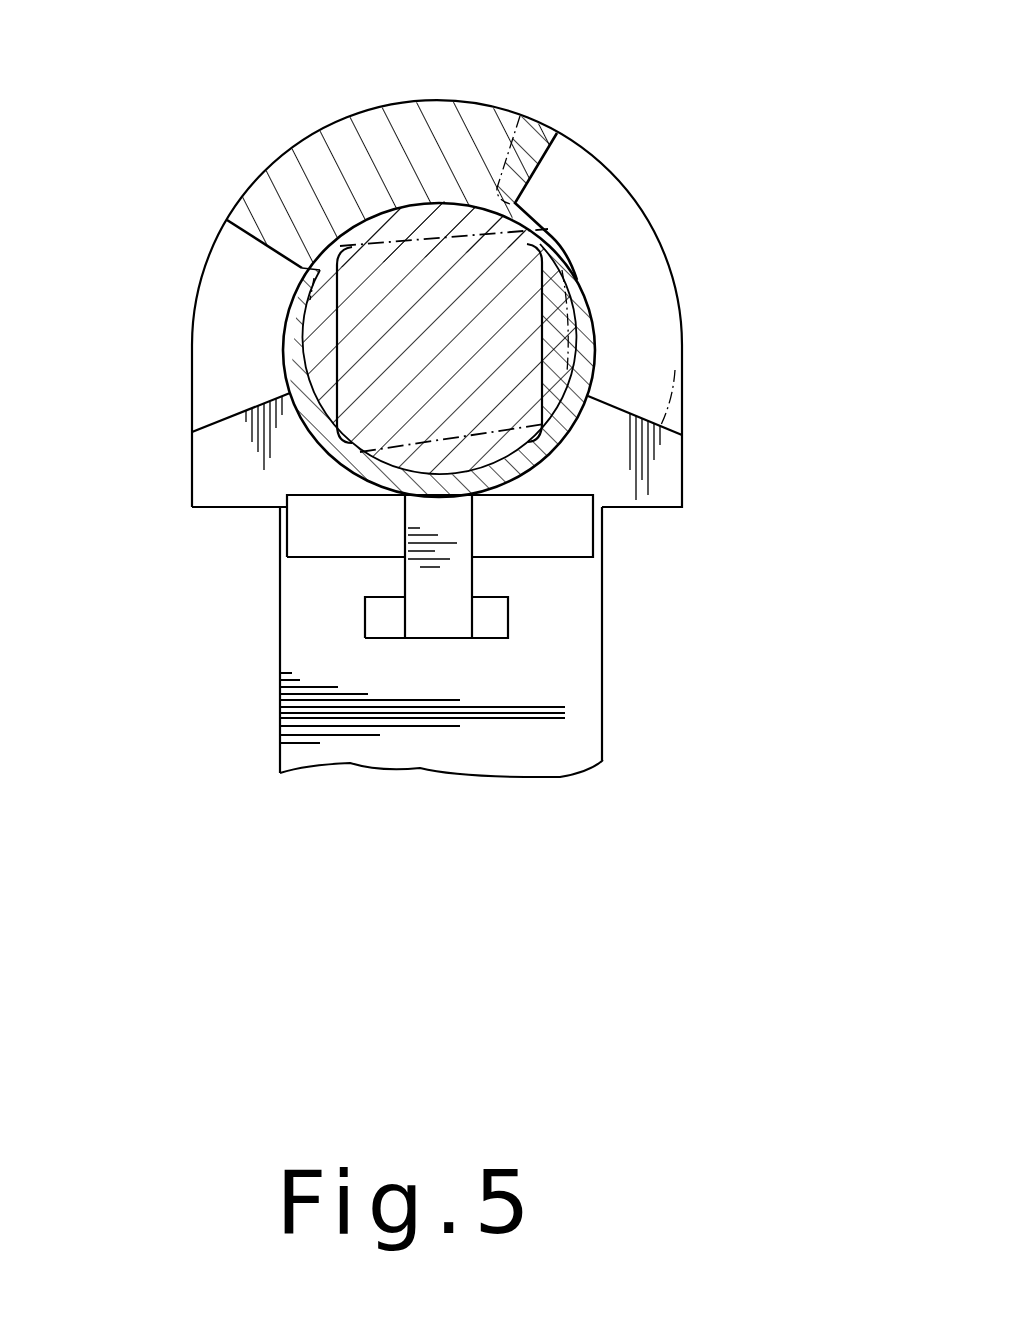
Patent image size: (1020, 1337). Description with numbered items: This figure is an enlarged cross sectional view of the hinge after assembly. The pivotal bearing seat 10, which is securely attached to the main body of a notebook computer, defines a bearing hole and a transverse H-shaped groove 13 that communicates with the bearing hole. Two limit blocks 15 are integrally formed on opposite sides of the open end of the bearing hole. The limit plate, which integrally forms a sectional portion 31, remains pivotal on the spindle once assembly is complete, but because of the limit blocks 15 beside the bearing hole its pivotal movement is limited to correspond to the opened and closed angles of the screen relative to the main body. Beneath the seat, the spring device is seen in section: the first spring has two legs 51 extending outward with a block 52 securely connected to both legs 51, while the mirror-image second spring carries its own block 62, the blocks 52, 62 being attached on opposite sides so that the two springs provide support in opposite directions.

The sectional portion 31 is at (375, 118).
The limit blocks 15 is at (220, 462).
The transverse H-shaped groove 13 is at (600, 562).
The legs 51 is at (440, 618).
The block 52 is at (372, 621).
The block 62 is at (490, 623).
The pivotal bearing seat 10 is at (573, 730).